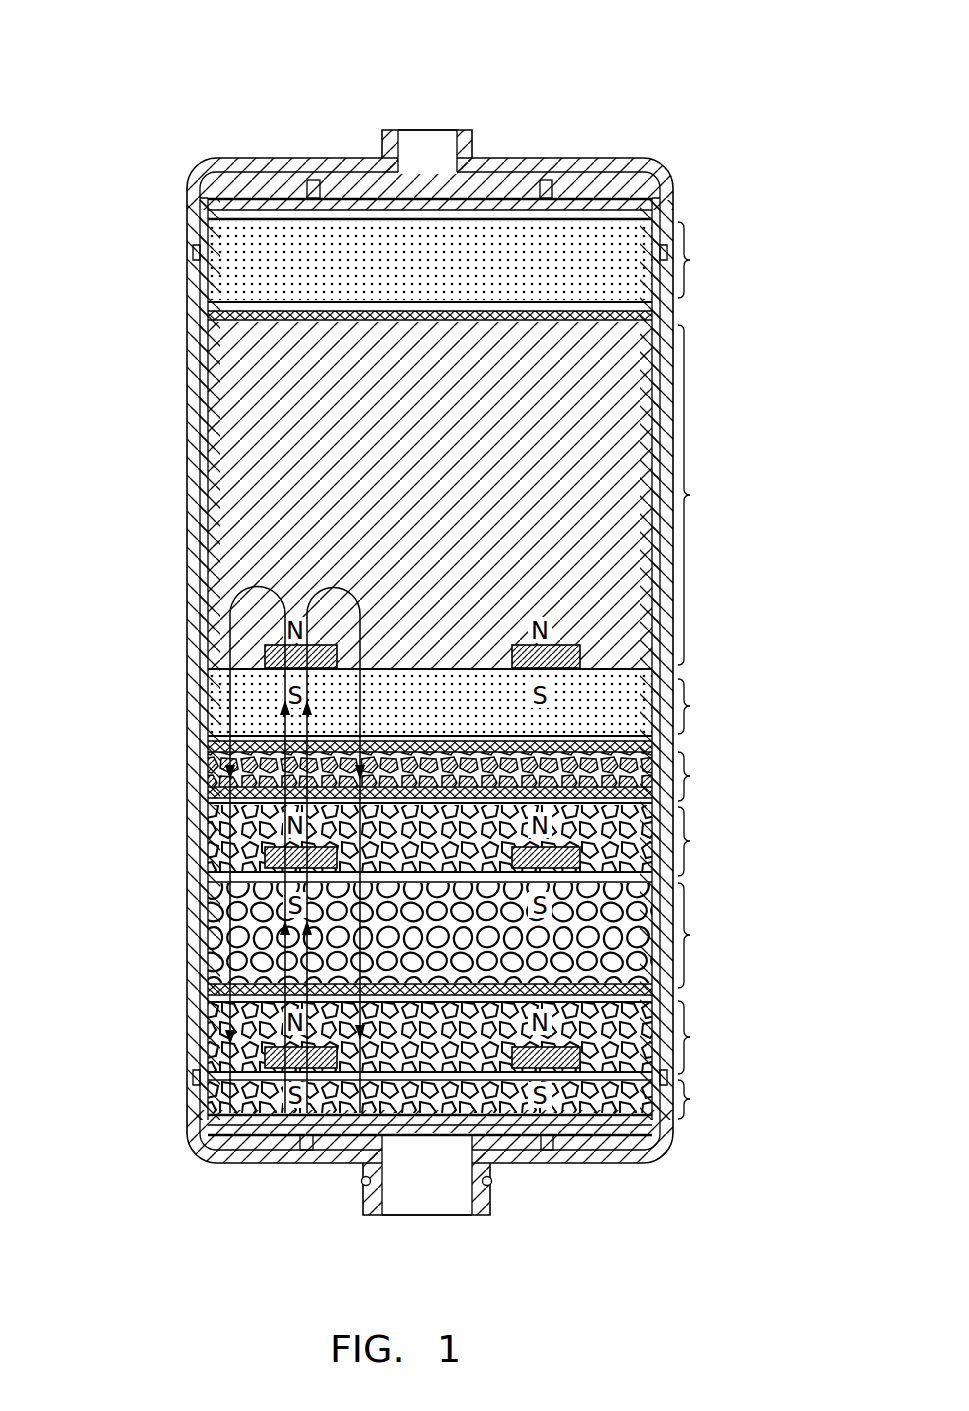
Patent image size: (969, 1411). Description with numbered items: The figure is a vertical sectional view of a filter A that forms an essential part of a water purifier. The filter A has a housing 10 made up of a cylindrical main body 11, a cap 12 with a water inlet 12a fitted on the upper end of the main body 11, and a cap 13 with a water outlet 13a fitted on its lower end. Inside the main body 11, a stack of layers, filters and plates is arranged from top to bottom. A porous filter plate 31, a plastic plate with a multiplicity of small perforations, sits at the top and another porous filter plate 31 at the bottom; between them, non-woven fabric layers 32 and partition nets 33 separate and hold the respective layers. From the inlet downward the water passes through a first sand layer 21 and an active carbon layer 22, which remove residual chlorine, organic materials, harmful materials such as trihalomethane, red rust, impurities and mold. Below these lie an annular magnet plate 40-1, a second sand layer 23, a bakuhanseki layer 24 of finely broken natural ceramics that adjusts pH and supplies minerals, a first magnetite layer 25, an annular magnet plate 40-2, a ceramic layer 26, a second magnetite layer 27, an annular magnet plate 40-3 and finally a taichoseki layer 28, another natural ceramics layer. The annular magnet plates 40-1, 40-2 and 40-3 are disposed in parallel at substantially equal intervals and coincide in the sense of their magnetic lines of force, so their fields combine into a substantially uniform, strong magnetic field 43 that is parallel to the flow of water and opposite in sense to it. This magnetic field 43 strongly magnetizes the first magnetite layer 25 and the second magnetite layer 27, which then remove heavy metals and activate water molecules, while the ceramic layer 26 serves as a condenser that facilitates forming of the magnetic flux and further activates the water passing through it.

The filter A is at (648, 118).
The housing 10 is at (188, 448).
The cylindrical main body 11 is at (195, 557).
The cap 12 is at (549, 158).
The water inlet 12a is at (421, 140).
The cap 13 is at (612, 1160).
The water outlet 13a is at (434, 1205).
The first sand layer 21 is at (465, 261).
The active carbon layer 22 is at (465, 495).
The second sand layer 23 is at (465, 703).
The bakuhanseki layer 24 is at (465, 777).
The first magnetite layer 25 is at (465, 840).
The ceramic layer 26 is at (465, 935).
The second magnetite layer 27 is at (465, 1037).
The taichoseki layer 28 is at (465, 1099).
The porous filter plate 31 is at (642, 203).
The non-woven fabric layer 32 is at (640, 217).
The partition net 33 is at (208, 315).
The annular magnet plate 40-1 is at (262, 657).
The annular magnet plate 40-2 is at (262, 856).
The annular magnet plate 40-3 is at (262, 1060).
The magnetic field 43 is at (205, 955).